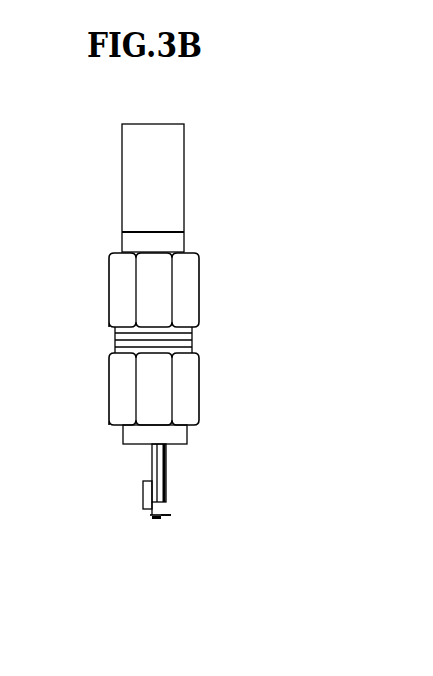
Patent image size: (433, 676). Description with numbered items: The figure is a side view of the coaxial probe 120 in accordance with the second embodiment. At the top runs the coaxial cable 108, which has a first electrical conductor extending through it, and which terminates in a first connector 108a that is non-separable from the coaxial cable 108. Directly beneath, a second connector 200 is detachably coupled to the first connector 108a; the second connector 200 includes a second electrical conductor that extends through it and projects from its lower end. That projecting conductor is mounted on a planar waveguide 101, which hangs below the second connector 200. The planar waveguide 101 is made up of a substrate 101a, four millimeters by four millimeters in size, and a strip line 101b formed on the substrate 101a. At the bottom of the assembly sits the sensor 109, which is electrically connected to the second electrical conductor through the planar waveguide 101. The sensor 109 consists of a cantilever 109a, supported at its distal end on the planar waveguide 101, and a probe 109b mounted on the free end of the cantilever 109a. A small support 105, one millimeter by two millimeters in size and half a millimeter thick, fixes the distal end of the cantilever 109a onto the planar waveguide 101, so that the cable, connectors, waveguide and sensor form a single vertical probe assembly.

The coaxial probe 120 is at (253, 199).
The coaxial cable 108 is at (98, 124).
The first connector 108a is at (187, 293).
The second connector 200 is at (187, 383).
The planar waveguide 101 is at (50, 443).
The strip line 101b is at (152, 455).
The substrate 101a is at (160, 471).
The support 105 is at (143, 492).
The sensor 109 is at (213, 583).
The cantilever 109a is at (155, 519).
The probe 109b is at (160, 518).